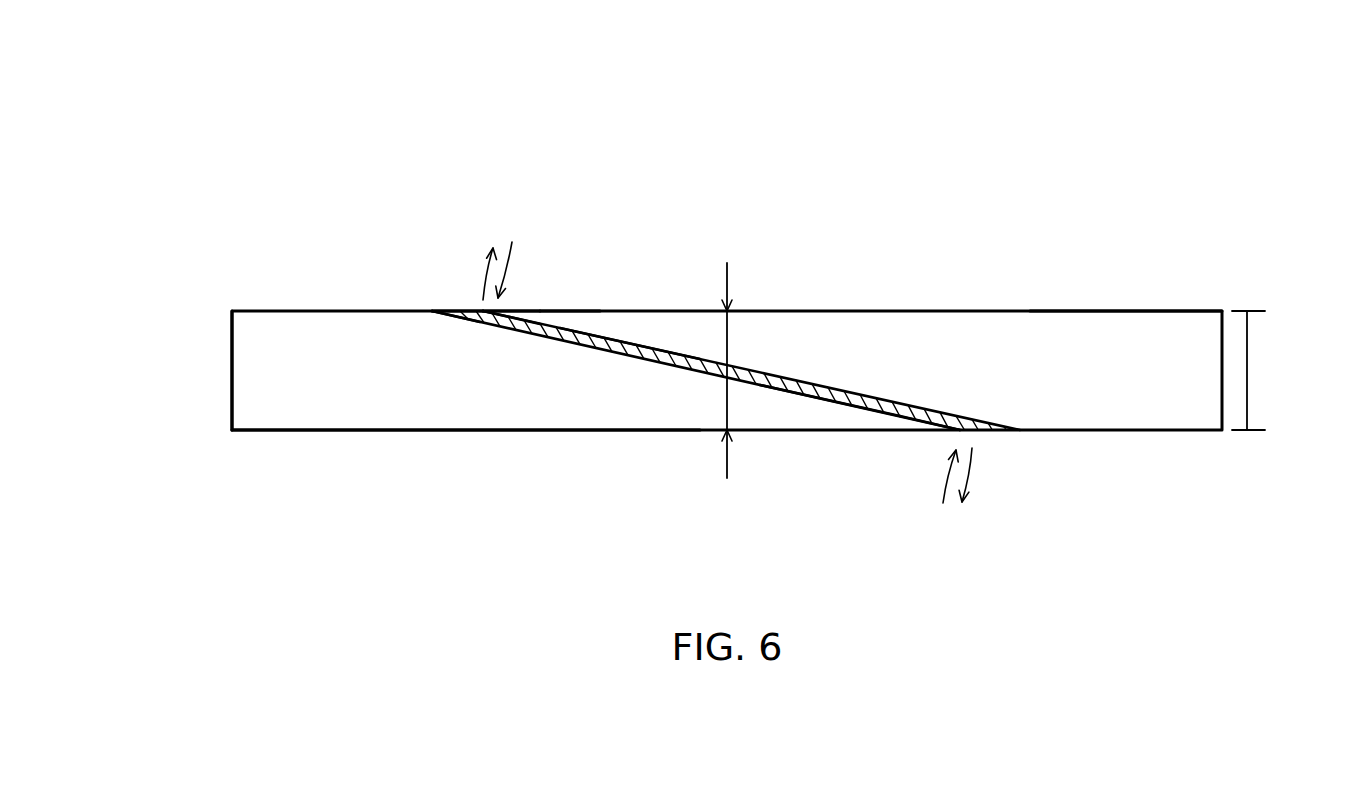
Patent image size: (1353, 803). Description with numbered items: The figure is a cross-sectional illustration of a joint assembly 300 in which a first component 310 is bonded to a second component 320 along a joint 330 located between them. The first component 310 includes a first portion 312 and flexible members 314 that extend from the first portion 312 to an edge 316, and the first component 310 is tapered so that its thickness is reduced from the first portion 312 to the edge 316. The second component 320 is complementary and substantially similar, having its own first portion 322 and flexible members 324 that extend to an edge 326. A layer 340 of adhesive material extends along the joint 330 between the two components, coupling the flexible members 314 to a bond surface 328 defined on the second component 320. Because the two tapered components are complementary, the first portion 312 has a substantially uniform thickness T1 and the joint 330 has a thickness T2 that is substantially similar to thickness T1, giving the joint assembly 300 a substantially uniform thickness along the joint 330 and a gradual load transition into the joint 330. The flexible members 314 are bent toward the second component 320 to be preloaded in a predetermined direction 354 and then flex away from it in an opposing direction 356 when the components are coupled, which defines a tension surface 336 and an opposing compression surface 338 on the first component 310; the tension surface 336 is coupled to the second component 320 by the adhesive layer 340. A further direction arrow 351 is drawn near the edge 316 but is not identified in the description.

The joint assembly 300 is at (188, 128).
The first component 310 is at (1222, 311).
The first portion 312 is at (1070, 328).
The flexible members 314 is at (615, 328).
The edge 316 is at (468, 305).
The second component 320 is at (232, 311).
The first portion 322 is at (348, 415).
The flexible members 324 is at (818, 418).
The edge 326 is at (960, 430).
The bond surface 328 is at (459, 308).
The joint 330 is at (727, 195).
The tension surface 336 is at (518, 309).
The compression surface 338 is at (562, 310).
The layer of adhesive material 340 is at (454, 310).
The first direction arrow 351 is at (507, 262).
The predetermined direction 354 is at (948, 478).
The opposing direction 356 is at (483, 300).
The thickness T1 is at (1247, 370).
The thickness T2 is at (727, 280).